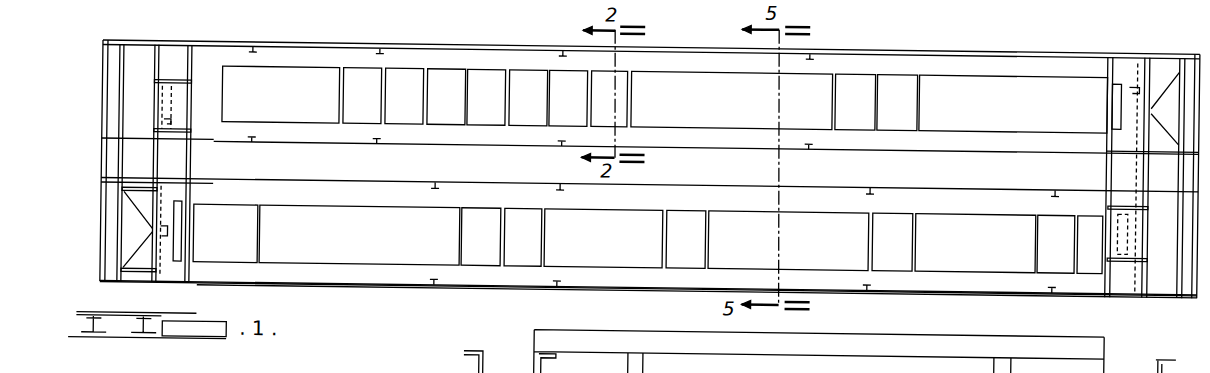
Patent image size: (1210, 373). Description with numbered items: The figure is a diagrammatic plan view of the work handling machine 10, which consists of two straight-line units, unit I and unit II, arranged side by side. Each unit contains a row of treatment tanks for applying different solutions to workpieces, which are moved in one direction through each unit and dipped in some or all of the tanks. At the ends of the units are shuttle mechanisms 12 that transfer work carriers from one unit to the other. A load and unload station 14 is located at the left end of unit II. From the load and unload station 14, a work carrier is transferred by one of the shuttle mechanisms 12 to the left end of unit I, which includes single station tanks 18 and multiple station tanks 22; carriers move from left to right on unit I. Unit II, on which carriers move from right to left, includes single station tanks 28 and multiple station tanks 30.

The work handling machine 10 is at (448, 298).
The shuttle mechanism 12 is at (120, 258).
The load and unload station 14 is at (250, 266).
The single station tank 18 is at (462, 70).
The multiple station tank 22 is at (262, 76).
The single station tank 28 is at (525, 214).
The multiple station tank 30 is at (318, 210).